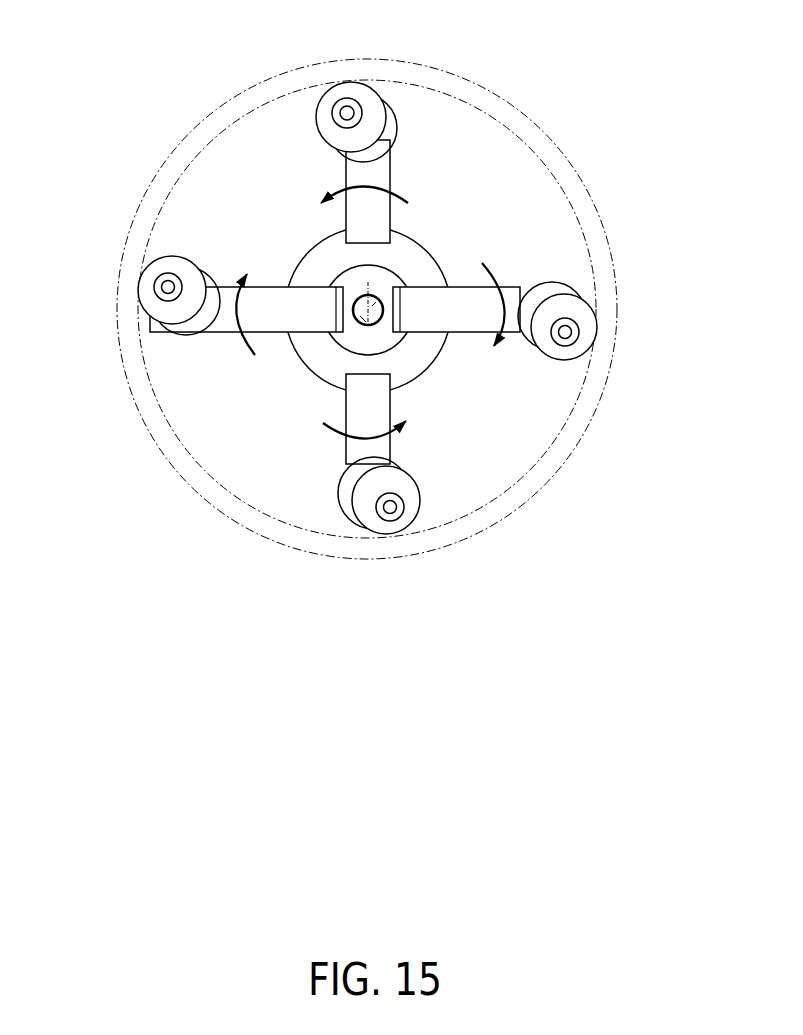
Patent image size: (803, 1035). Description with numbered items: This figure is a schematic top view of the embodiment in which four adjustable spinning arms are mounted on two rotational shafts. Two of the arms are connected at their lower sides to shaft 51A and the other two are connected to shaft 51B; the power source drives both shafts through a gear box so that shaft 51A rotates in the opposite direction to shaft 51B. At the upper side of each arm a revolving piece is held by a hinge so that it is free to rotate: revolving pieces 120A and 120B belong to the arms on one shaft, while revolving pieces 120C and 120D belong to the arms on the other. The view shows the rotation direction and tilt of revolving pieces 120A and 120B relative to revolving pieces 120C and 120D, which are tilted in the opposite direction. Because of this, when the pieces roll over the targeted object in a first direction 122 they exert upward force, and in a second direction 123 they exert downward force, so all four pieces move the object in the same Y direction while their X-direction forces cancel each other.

The shaft 51A is at (338, 273).
The shaft 51B is at (432, 243).
The revolving piece 120A is at (168, 338).
The revolving piece 120B is at (583, 351).
The revolving piece 120C is at (369, 94).
The revolving piece 120D is at (420, 526).
The first direction 122 is at (489, 369).
The second direction 123 is at (316, 444).